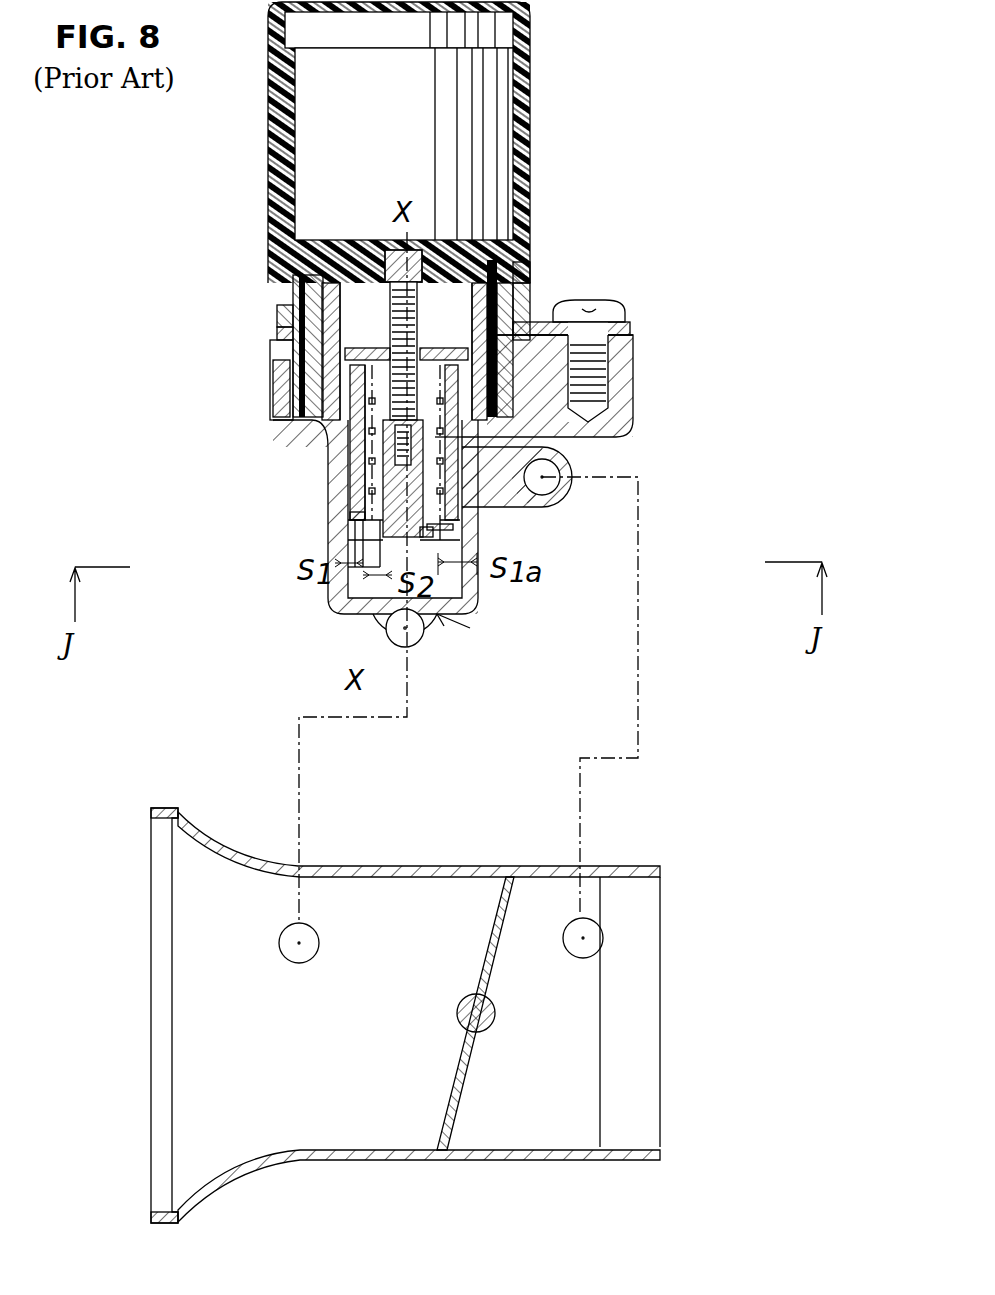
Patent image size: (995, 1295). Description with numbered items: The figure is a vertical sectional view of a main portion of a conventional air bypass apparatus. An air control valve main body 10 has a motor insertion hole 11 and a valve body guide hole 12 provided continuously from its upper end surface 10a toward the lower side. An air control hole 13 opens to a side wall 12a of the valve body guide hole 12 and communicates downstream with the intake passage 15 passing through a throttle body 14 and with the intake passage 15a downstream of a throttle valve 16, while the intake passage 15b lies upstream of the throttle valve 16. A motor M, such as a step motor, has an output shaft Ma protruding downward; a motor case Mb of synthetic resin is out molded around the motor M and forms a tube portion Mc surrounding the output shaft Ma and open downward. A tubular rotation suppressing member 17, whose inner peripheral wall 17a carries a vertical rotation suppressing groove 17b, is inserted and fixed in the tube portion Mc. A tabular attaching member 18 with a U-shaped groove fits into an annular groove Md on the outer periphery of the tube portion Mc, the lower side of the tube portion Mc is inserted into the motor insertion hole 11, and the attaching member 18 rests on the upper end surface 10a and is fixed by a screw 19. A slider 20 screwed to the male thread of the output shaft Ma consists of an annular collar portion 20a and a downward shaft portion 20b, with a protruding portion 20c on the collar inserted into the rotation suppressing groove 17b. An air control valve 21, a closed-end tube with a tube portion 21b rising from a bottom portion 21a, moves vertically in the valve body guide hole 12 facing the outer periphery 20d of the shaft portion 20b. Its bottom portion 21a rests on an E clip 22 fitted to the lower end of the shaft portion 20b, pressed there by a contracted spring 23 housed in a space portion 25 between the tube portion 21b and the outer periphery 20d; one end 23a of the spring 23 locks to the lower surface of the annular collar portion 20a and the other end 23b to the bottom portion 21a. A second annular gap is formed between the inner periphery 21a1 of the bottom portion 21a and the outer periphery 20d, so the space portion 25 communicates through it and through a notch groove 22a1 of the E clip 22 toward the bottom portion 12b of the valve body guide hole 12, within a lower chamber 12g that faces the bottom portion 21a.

The motor M is at (372, 93).
The motor case Mb is at (530, 110).
The tube portion Mc is at (295, 302).
The output shaft Ma is at (418, 297).
The annular groove Md is at (272, 357).
The rotation suppressing member 17 is at (293, 280).
The inner peripheral wall 17a is at (522, 268).
The rotation suppressing groove 17b is at (518, 296).
The screw 19 is at (626, 306).
The attaching member 18 is at (631, 328).
The upper end surface 10a is at (634, 350).
The air control valve main body 10 is at (635, 412).
The annular collar portion 20a is at (366, 351).
The protruding portion 20c is at (445, 351).
The spring 23 is at (276, 367).
The one end of spring 23a is at (162, 372).
The motor insertion hole 11 is at (274, 393).
The slider 20 is at (345, 432).
The shaft portion 20b is at (198, 432).
The outer periphery of shaft portion 20d is at (304, 427).
The air control valve 21 is at (350, 478).
The tube portion 21b is at (277, 452).
The bottom portion 21a is at (352, 512).
The inner periphery of bottom portion 21a1 is at (358, 535).
The space portion 25 is at (440, 440).
The air control hole 13 is at (462, 483).
The other end of spring 23b is at (445, 505).
The E clip 22 is at (455, 540).
The notch groove 22a1 is at (357, 600).
The valve body guide hole 12 is at (472, 590).
The side wall 12a is at (532, 630).
The bottom portion 12b is at (452, 620).
The lower chamber 12g is at (500, 618).
The throttle valve 16 is at (460, 1062).
The intake passage 15b is at (283, 1100).
The intake passage 15 is at (475, 979).
The intake passage 15a is at (620, 1082).
The throttle body 14 is at (487, 1160).